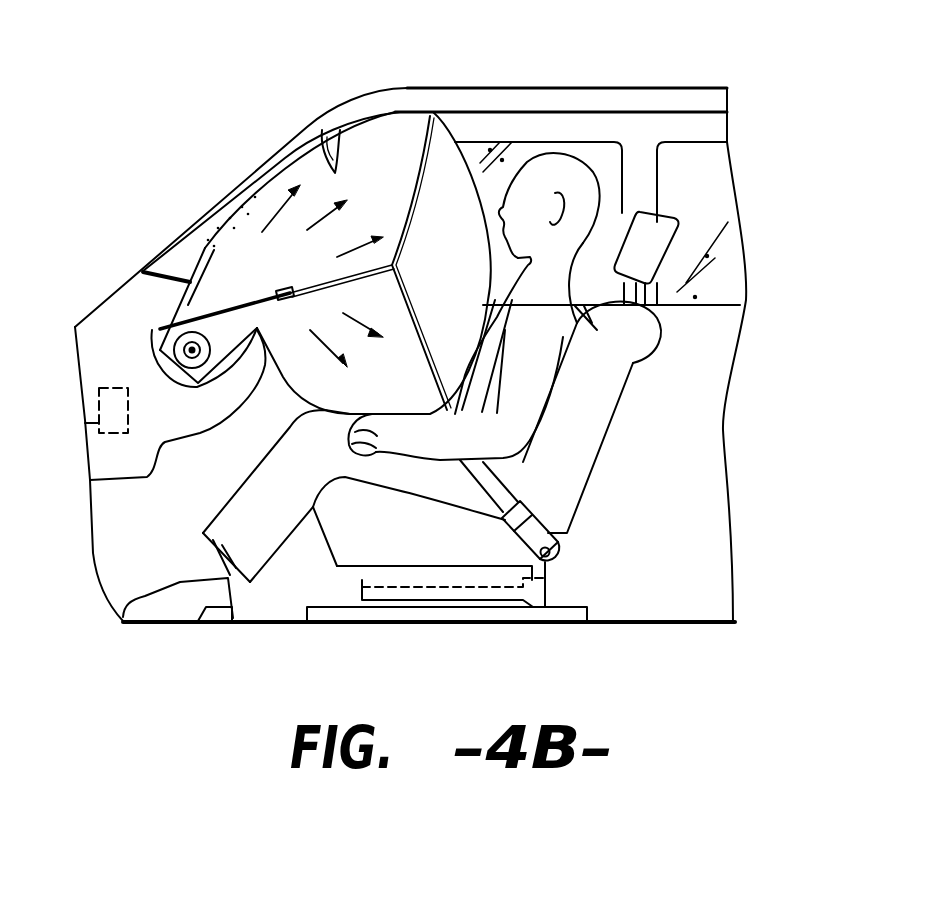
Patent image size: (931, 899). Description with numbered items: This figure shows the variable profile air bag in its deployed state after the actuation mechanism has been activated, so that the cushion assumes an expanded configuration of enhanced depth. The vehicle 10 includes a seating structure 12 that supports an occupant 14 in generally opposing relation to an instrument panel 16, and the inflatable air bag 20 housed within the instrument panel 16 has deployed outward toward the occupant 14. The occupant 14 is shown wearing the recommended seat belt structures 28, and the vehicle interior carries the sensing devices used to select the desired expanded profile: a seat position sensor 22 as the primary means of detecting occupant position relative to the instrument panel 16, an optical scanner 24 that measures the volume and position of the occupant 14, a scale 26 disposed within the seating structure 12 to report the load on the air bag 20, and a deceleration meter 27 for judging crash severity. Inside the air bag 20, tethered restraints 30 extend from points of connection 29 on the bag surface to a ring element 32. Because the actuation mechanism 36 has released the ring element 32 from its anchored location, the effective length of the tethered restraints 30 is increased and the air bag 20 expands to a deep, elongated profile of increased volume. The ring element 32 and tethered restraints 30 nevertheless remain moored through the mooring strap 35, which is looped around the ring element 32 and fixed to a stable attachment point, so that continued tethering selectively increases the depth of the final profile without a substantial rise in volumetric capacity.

The vehicle 10 is at (777, 84).
The seating structure 12 is at (617, 412).
The occupant 14 is at (553, 152).
The instrument panel 16 is at (128, 298).
The inflatable air bag 20 is at (300, 153).
The seat position sensor 22 is at (340, 587).
The optical scanner 24 is at (372, 110).
The scale 26 is at (542, 578).
The deceleration meter 27 is at (82, 423).
The seat belt structures 28 is at (517, 483).
The points of connection 29 is at (435, 122).
The tethered restraints 30 is at (405, 200).
The ring element 32 is at (285, 293).
The mooring strap 35 is at (232, 292).
The actuation mechanism 36 is at (152, 328).